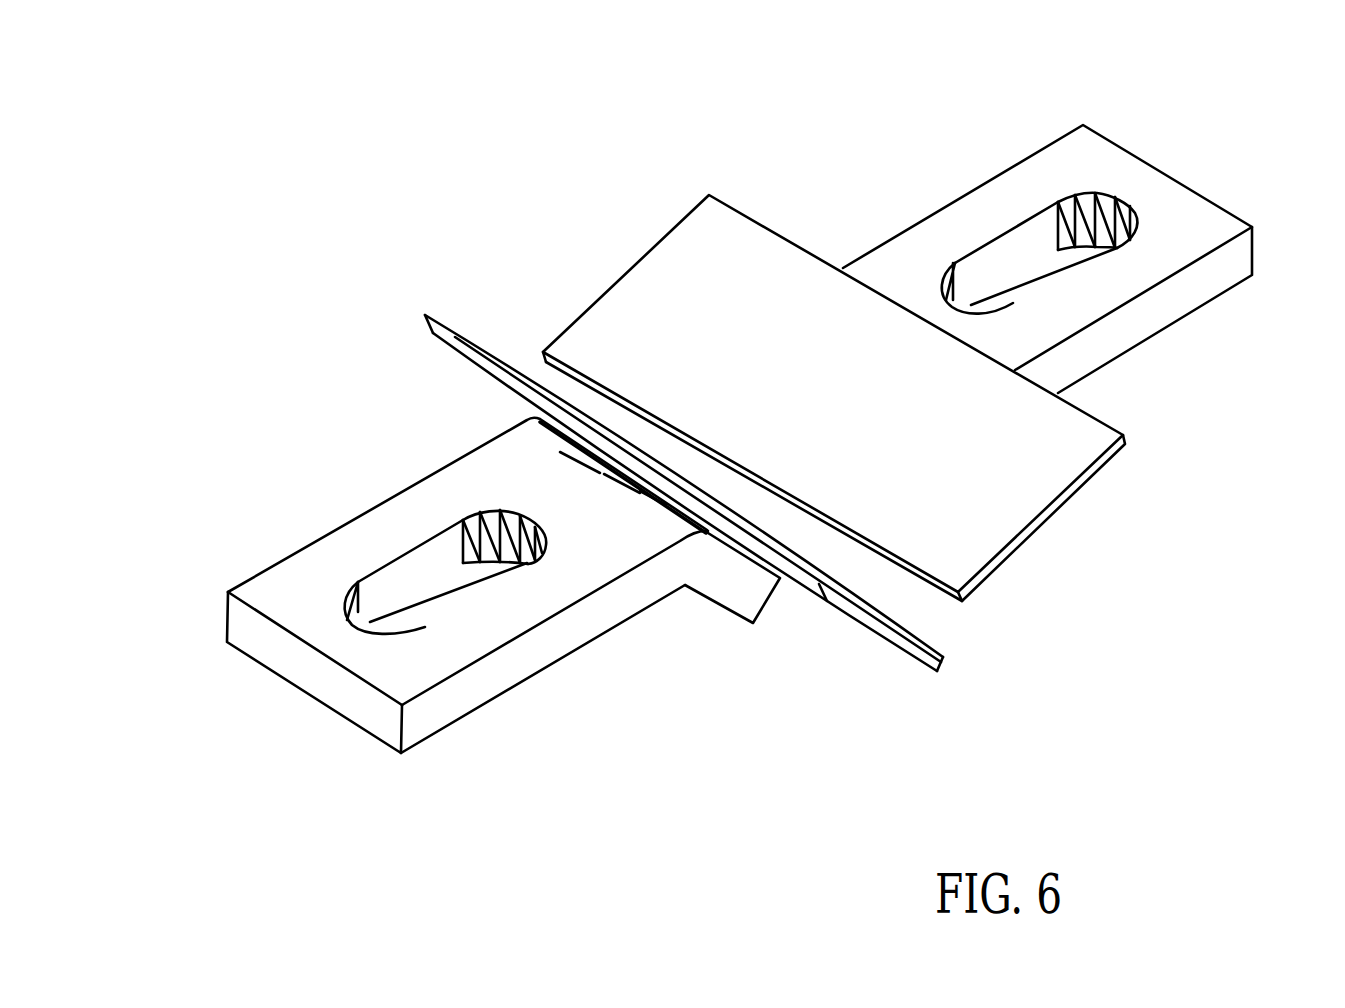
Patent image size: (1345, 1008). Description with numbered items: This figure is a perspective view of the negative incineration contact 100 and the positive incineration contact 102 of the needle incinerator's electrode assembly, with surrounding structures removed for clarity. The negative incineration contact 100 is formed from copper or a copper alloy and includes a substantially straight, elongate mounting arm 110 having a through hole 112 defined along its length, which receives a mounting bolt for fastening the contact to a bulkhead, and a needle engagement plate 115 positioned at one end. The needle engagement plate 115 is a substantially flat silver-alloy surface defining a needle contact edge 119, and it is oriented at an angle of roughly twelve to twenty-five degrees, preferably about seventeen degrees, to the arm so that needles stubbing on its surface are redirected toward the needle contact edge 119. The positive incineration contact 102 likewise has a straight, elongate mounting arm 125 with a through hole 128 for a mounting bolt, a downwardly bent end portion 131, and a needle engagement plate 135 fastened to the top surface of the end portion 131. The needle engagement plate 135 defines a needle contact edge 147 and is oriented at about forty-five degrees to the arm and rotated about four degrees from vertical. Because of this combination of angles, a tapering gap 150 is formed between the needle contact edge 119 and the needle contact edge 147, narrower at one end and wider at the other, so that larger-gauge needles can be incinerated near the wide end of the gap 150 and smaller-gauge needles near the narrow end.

The negative incineration contact 100 is at (1001, 158).
The positive incineration contact 102 is at (552, 690).
The mounting arm 110 is at (1223, 223).
The through hole 112 is at (993, 257).
The needle engagement plate 115 is at (697, 223).
The needle contact edge 119 is at (916, 570).
The mounting arm 125 is at (282, 587).
The through hole 128 is at (397, 572).
The end portion 131 is at (745, 604).
The needle engagement plate 135 is at (430, 331).
The needle contact edge 147 is at (858, 589).
The gap 150 is at (540, 368).